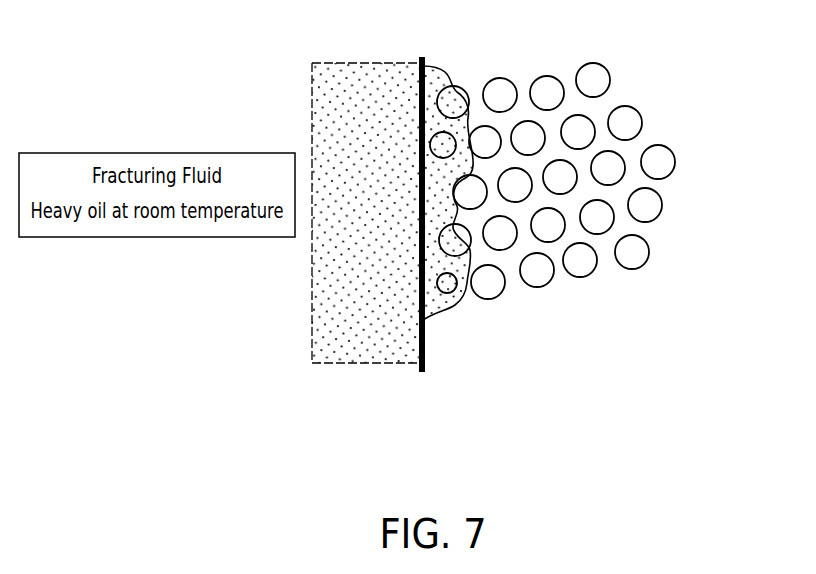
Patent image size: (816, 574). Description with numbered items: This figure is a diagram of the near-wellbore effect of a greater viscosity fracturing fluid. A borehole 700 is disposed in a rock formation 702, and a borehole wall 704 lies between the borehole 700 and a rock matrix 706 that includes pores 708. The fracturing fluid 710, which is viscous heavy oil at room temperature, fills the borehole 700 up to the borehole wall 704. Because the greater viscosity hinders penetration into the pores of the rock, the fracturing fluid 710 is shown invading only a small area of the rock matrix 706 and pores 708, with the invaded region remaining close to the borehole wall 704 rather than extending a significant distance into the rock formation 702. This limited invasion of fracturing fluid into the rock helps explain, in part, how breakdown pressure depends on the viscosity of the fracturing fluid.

The borehole 700 is at (362, 366).
The rock formation 702 is at (606, 220).
The borehole wall 704 is at (425, 351).
The rock matrix 706 is at (622, 76).
The pores 708 is at (665, 188).
The fracturing fluid 710 is at (449, 68).